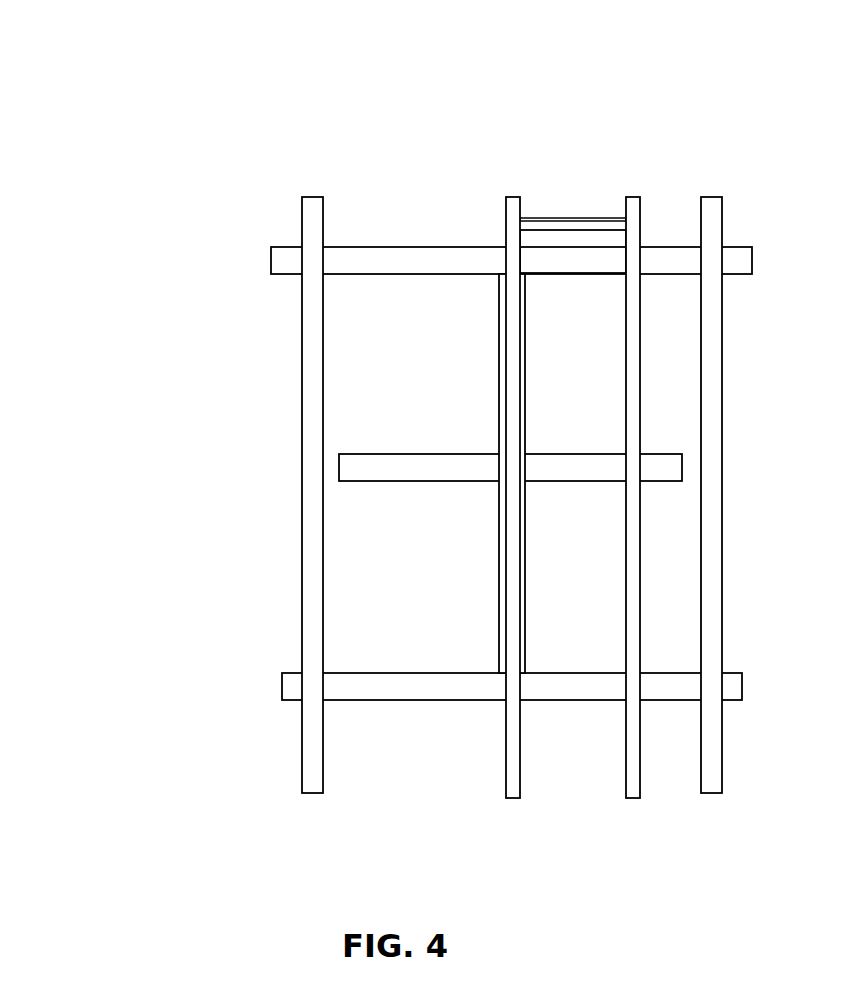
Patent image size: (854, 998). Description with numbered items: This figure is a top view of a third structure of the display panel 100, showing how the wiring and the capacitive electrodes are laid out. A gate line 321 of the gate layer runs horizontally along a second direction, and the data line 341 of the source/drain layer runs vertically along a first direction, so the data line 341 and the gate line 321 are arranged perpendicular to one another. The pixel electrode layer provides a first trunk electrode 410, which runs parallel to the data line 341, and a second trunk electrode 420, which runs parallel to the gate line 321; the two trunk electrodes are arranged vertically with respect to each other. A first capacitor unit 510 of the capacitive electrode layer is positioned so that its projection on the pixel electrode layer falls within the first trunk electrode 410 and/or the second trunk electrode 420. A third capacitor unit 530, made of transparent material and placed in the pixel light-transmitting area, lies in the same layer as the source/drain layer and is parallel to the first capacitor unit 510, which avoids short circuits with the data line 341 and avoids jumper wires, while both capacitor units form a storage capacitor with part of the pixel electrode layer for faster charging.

The display panel 100 is at (161, 83).
The gate line 321 is at (282, 686).
The data line 341 is at (302, 218).
The first trunk electrode 410 is at (500, 645).
The second trunk electrode 420 is at (338, 470).
The first capacitor unit 510 is at (507, 208).
The third capacitor unit 530 is at (642, 213).